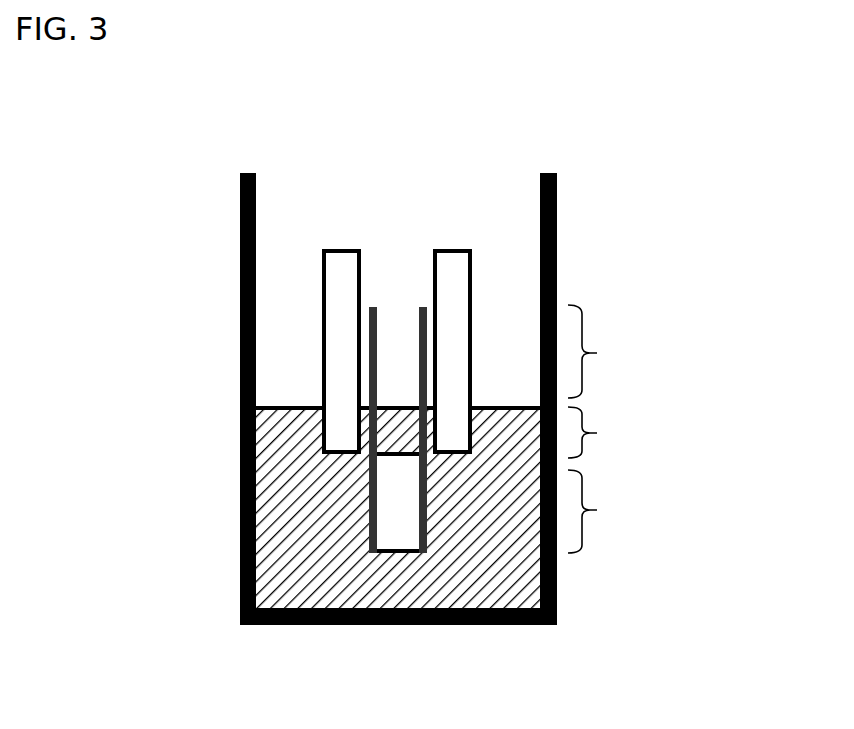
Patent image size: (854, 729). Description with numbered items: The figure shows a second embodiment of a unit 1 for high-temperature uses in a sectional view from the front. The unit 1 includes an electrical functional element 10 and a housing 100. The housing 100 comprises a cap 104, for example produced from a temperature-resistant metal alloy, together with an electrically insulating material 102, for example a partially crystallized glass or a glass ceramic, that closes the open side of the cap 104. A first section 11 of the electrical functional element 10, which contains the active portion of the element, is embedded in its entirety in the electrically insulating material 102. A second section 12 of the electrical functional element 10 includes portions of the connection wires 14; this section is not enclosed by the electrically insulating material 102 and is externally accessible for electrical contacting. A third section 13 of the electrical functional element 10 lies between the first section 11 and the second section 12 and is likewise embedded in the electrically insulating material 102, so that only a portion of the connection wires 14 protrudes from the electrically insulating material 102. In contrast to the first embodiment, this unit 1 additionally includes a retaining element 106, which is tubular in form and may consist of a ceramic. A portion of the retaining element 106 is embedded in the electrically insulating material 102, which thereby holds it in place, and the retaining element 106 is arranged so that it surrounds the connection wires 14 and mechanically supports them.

The unit 1 is at (588, 142).
The housing 100 is at (559, 243).
The electrically insulating material 102 is at (293, 515).
The cap 104 is at (238, 550).
The retaining element 106 is at (336, 391).
The electrical functional element 10 is at (430, 390).
The connection wires 14 is at (370, 325).
The first section 11 is at (608, 511).
The second section 12 is at (608, 351).
The third section 13 is at (608, 432).